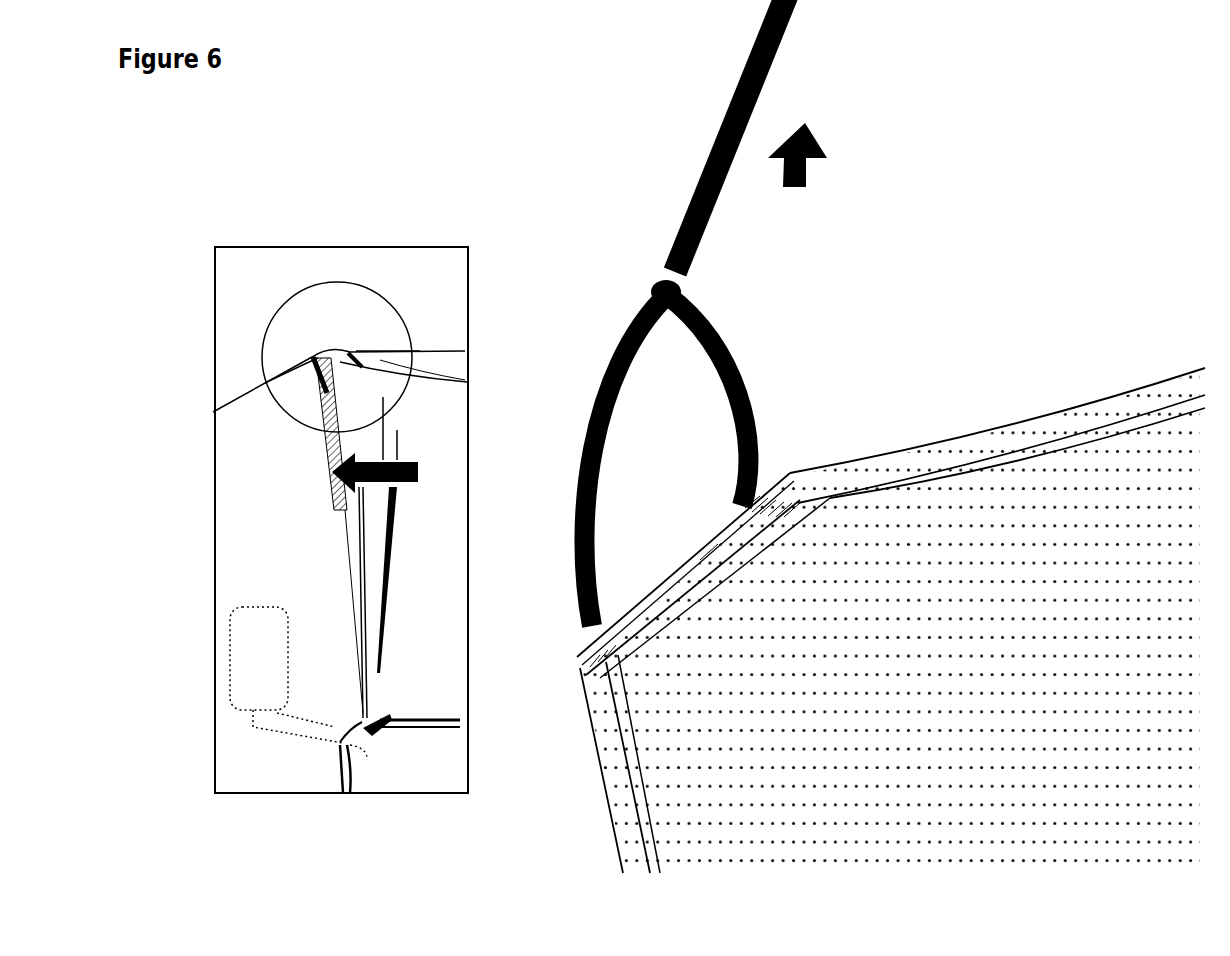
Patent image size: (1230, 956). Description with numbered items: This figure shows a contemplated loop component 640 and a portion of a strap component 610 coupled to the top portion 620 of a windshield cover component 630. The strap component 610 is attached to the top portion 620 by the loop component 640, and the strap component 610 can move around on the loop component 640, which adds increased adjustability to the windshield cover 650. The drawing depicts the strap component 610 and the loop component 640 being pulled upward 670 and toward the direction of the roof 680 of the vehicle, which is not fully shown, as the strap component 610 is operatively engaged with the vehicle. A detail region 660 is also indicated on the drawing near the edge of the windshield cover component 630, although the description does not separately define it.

The strap component 610 is at (706, 207).
The top portion 620 is at (887, 452).
The windshield cover component 630 is at (996, 498).
The loop component 640 is at (745, 378).
The windshield cover 650 is at (973, 254).
The edge portion 660 is at (429, 408).
The pulled upward 670 is at (421, 226).
The roof 680 is at (418, 357).